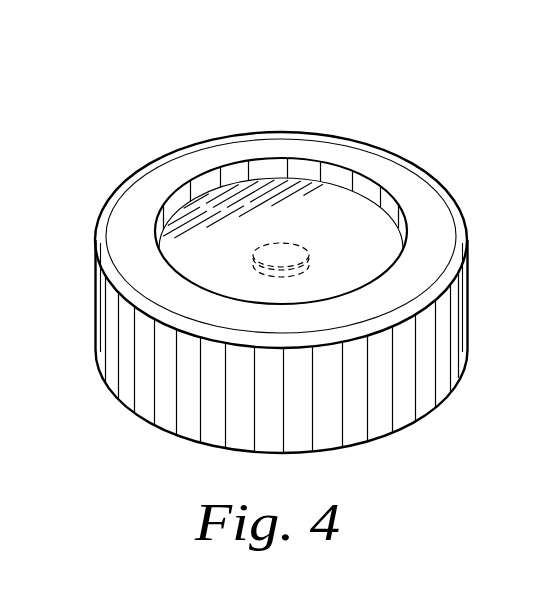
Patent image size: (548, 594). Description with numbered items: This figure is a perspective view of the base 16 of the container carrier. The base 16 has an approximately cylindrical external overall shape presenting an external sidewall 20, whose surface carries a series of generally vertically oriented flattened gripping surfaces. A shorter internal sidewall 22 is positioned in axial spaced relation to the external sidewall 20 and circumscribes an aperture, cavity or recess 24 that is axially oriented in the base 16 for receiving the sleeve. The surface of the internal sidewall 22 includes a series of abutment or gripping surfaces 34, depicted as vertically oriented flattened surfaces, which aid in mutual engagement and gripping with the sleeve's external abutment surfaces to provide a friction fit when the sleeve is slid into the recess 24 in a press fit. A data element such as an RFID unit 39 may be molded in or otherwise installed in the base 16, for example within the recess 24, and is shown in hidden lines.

The base 16 is at (340, 86).
The external sidewall 20 is at (107, 322).
The internal sidewall 22 is at (261, 168).
The recess 24 is at (198, 243).
The abutment surfaces 34 is at (332, 175).
The RFID unit 39 is at (305, 250).